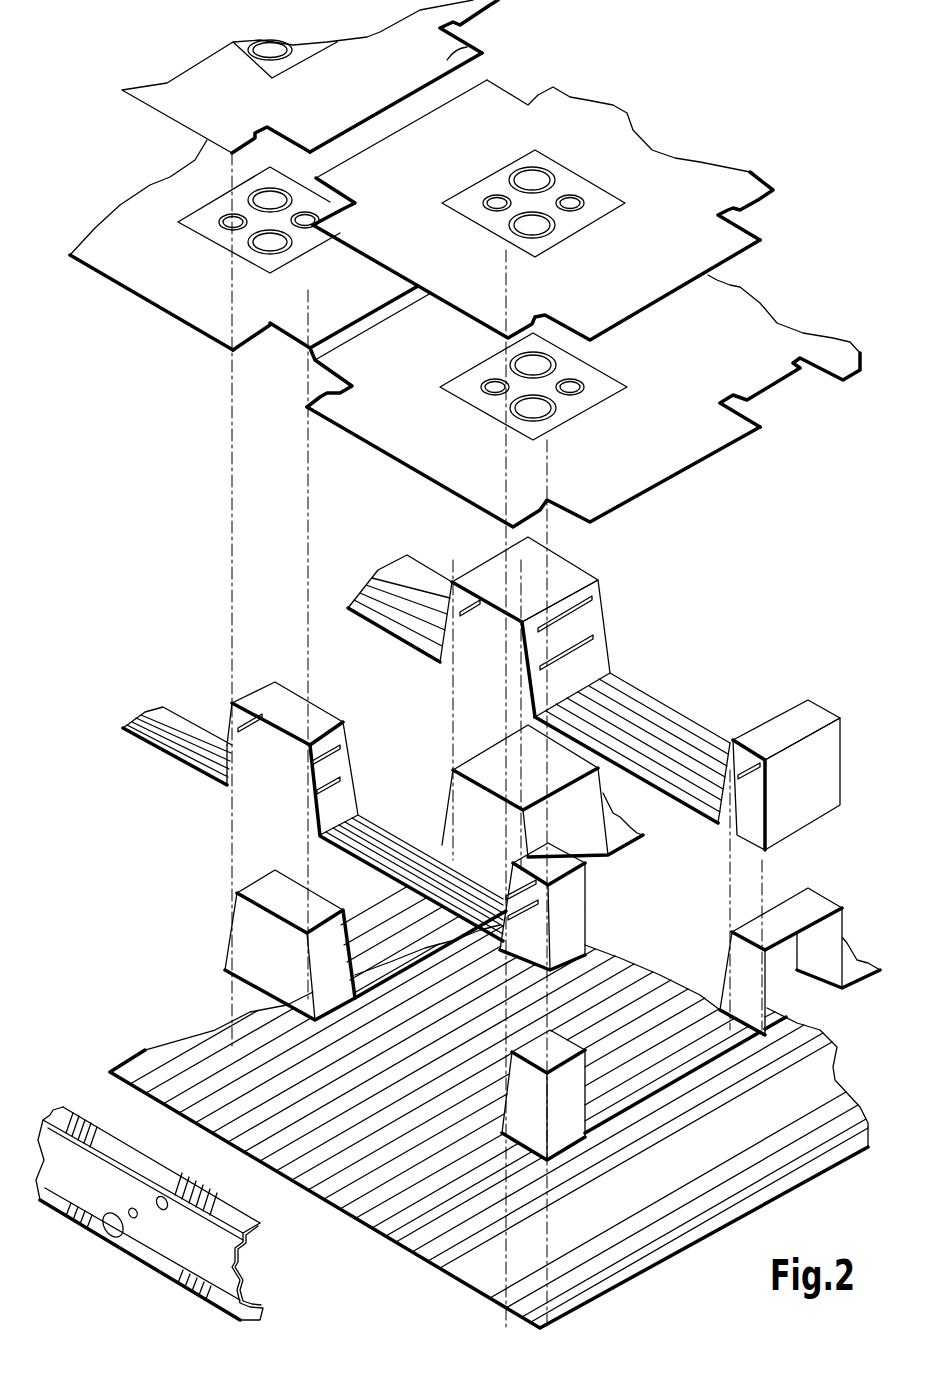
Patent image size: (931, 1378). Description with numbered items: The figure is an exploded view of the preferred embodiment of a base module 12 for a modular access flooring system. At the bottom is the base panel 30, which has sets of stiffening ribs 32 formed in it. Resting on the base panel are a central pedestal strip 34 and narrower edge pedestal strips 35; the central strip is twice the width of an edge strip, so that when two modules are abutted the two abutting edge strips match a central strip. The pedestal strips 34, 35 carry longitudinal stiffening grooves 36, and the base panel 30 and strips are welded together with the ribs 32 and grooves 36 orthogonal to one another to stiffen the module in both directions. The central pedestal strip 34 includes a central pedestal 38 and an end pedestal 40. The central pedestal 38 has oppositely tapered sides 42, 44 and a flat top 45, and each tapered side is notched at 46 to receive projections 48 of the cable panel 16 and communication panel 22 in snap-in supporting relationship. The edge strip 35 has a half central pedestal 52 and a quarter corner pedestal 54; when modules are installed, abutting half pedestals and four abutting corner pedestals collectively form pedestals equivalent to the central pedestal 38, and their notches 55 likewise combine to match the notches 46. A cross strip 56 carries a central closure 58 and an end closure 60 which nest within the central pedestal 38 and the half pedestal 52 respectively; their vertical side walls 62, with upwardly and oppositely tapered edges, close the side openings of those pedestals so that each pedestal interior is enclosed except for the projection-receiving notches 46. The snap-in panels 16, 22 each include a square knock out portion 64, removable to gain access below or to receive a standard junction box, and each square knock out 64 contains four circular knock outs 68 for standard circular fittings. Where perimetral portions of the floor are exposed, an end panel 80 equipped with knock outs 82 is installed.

The base module 12 is at (336, 1248).
The cable panel 16 is at (223, 328).
The communication panel 22 is at (570, 110).
The base panel 30 is at (223, 1103).
The stiffening ribs 32 is at (270, 1167).
The central pedestal strip 34 is at (650, 700).
The edge pedestal strip 35 is at (187, 738).
The longitudinal stiffening grooves 36 is at (680, 753).
The central pedestal 38 is at (560, 620).
The end pedestal 40 is at (592, 849).
The tapered pedestal side 42 is at (463, 635).
The tapered pedestal side 44 is at (593, 663).
The flat top 45 is at (553, 567).
The notch 46 is at (480, 617).
The projections 48 is at (483, 22).
The half central pedestal 52 is at (313, 810).
The quarter corner pedestal 54 is at (594, 897).
The notches 55 is at (323, 793).
The cross strip 56 is at (823, 772).
The central closure 58 is at (493, 768).
The end closure 60 is at (267, 890).
The vertical side walls 62 is at (322, 950).
The square knock out portion 64 is at (470, 203).
The circular knock outs 68 is at (233, 222).
The end panel 80 is at (83, 1203).
The knock outs 82 is at (160, 1210).